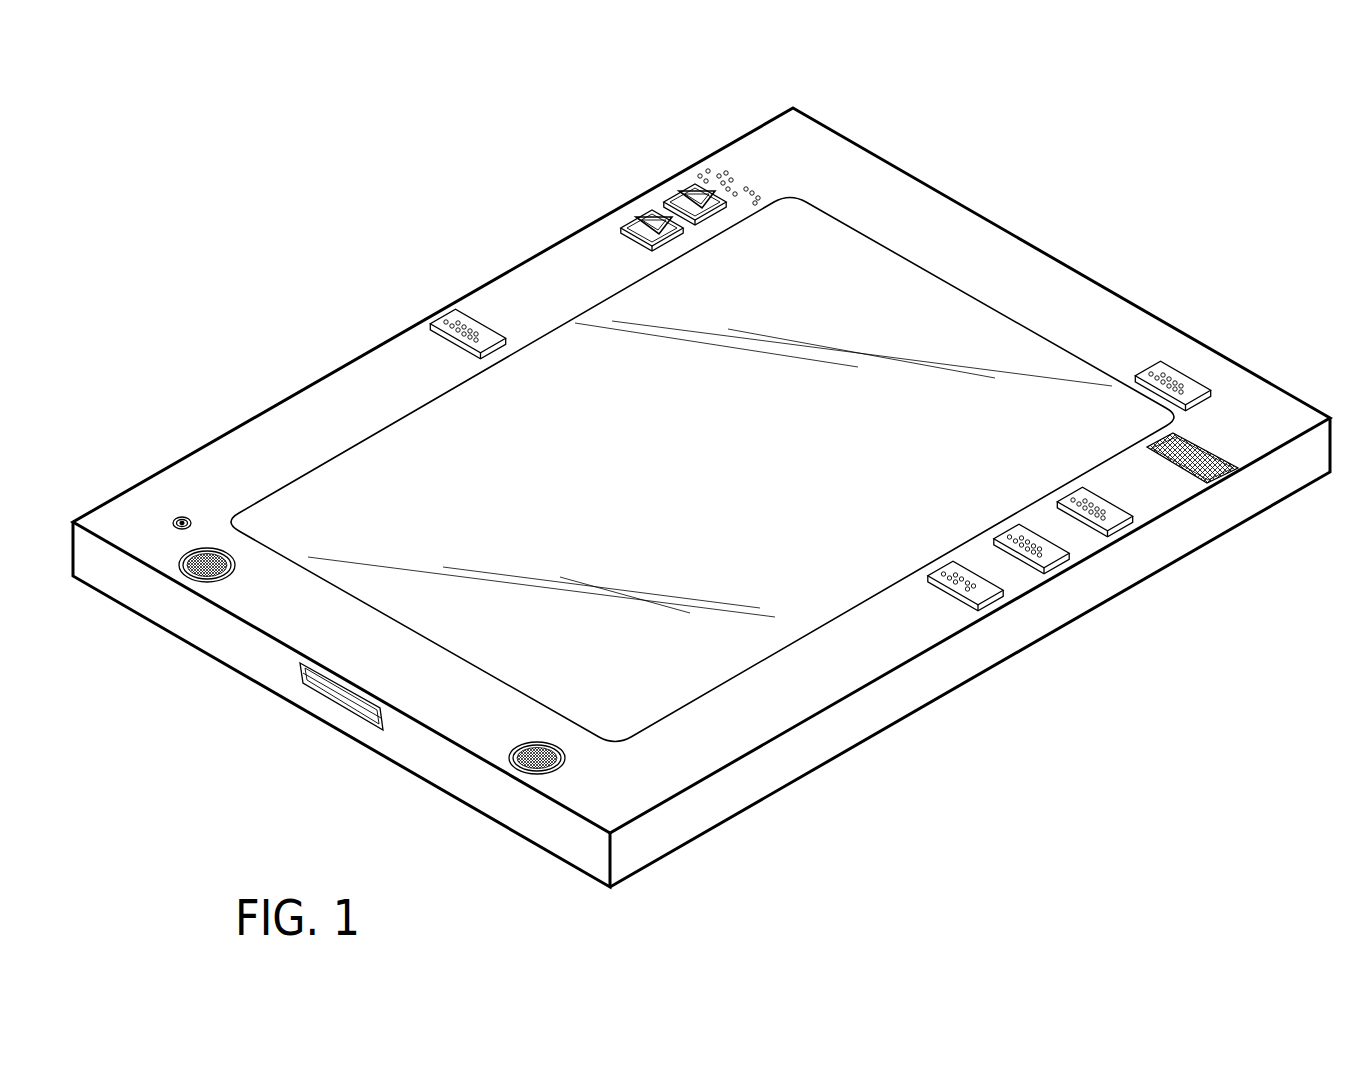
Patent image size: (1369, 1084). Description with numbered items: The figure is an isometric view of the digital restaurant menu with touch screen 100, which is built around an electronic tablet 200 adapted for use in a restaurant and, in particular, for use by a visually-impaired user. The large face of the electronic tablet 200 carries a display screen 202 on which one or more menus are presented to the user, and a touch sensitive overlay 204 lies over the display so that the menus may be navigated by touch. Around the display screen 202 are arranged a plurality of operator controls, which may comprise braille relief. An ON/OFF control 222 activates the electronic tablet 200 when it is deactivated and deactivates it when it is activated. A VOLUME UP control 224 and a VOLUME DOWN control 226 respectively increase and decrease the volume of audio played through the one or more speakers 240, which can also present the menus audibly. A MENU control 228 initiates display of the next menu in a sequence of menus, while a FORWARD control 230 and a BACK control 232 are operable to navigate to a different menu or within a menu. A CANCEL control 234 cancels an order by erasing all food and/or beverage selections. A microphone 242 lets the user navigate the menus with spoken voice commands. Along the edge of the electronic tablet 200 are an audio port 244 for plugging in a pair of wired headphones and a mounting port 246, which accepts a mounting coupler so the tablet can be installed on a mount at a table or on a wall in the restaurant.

The digital restaurant menu with touch screen 100 is at (246, 196).
The electronic tablet 200 is at (922, 183).
The display screen 202 is at (938, 275).
The touch sensitive overlay 204 is at (978, 350).
The ON/OFF control 222 is at (1162, 360).
The VOLUME UP control 224 is at (686, 188).
The VOLUME DOWN control 226 is at (632, 222).
The MENU control 228 is at (1112, 524).
The FORWARD control 230 is at (1044, 568).
The BACK control 232 is at (978, 605).
The CANCEL control 234 is at (447, 310).
The speakers 240 is at (193, 578).
The microphone 242 is at (1230, 470).
The audio port 244 is at (178, 518).
The mounting port 246 is at (327, 698).